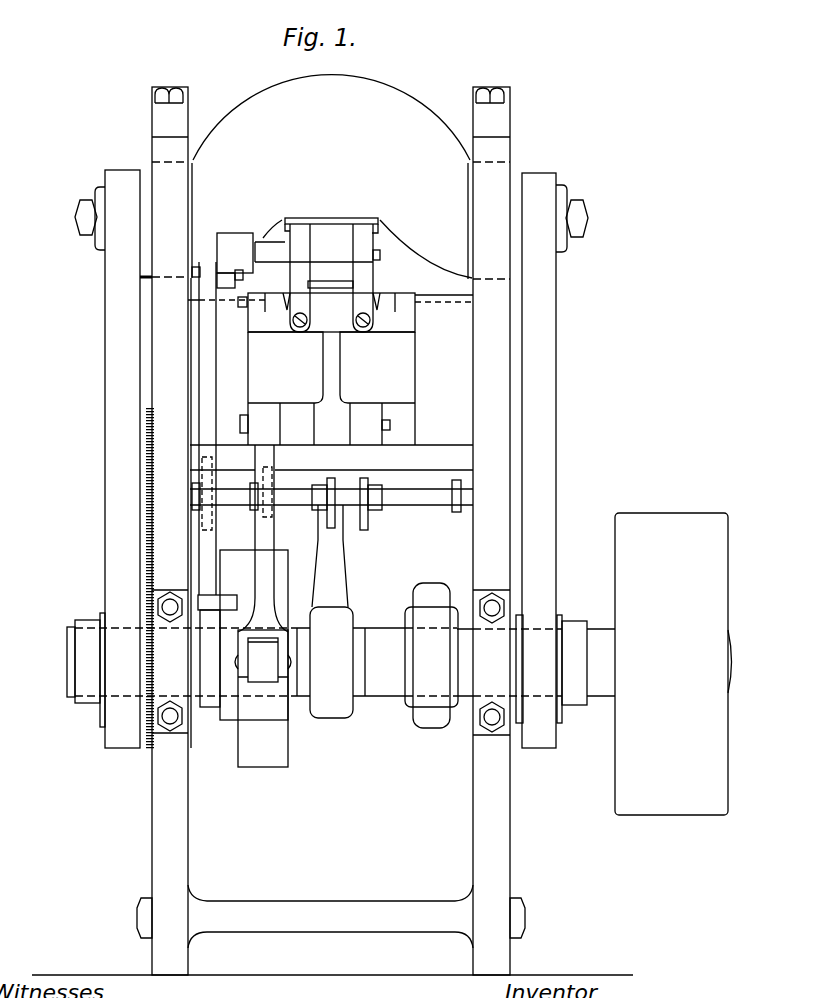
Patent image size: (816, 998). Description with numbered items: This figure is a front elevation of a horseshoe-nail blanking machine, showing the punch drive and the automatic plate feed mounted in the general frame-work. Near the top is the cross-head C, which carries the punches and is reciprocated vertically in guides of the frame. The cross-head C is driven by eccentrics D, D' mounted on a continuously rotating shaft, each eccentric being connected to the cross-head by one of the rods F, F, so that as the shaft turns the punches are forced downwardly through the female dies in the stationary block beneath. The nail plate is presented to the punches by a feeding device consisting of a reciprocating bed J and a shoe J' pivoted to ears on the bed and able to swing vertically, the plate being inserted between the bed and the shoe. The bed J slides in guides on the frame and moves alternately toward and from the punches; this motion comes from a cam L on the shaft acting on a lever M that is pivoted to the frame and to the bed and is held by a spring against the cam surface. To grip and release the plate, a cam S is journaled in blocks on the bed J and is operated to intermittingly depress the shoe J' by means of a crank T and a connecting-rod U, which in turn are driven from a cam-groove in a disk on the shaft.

The cross-head C is at (332, 176).
The rod F is at (330, 459).
The eccentric D is at (565, 677).
The eccentric D' is at (86, 677).
The cam S is at (332, 275).
The shoe J' is at (314, 265).
The reciprocating bed J is at (360, 308).
The crank T is at (257, 250).
The connecting-rod U is at (226, 484).
The lever M is at (254, 635).
The cam L is at (263, 698).